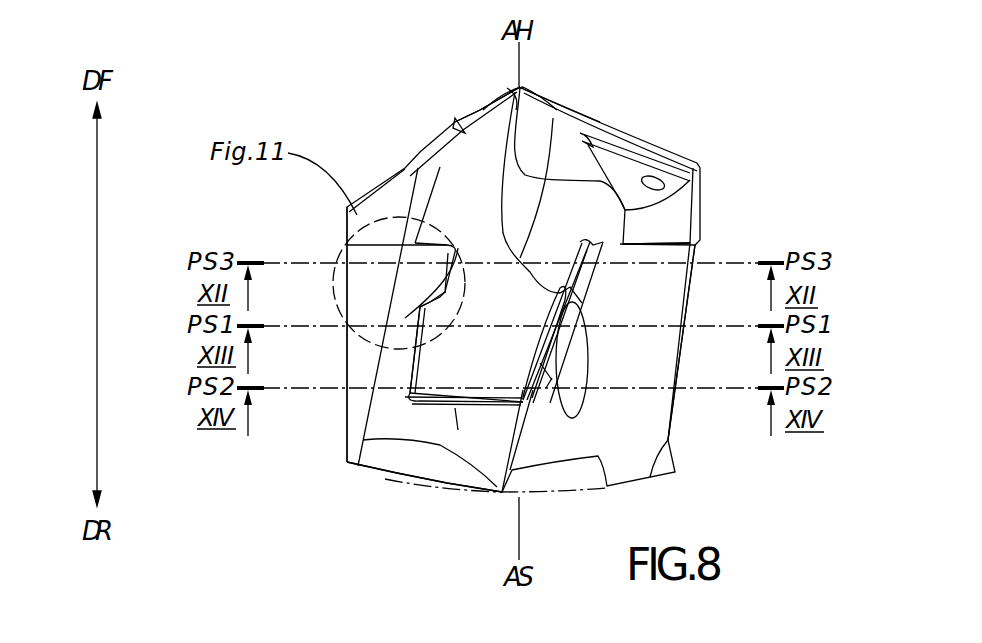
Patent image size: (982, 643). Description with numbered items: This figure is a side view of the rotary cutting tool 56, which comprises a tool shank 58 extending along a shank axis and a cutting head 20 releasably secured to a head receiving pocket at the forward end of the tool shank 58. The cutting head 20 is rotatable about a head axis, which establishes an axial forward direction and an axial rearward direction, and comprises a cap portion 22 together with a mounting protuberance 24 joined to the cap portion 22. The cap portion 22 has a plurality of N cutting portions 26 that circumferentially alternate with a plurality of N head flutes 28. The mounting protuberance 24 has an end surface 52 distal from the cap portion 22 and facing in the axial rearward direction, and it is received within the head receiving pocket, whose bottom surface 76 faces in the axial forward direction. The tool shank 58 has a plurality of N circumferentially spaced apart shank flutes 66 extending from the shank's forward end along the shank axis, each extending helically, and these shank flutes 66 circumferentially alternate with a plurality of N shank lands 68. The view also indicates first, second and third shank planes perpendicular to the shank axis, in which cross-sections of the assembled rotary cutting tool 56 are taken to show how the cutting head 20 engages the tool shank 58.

The cutting head 20 is at (393, 158).
The cap portion 22 is at (478, 160).
The mounting protuberance 24 is at (500, 346).
The cutting portions 26 is at (680, 239).
The head flutes 28 is at (486, 221).
The end surface 52 is at (427, 403).
The rotary cutting tool 56 is at (727, 228).
The tool shank 58 is at (330, 421).
The shank flutes 66 is at (513, 446).
The shank lands 68 is at (646, 429).
The bottom surface 76 is at (437, 393).